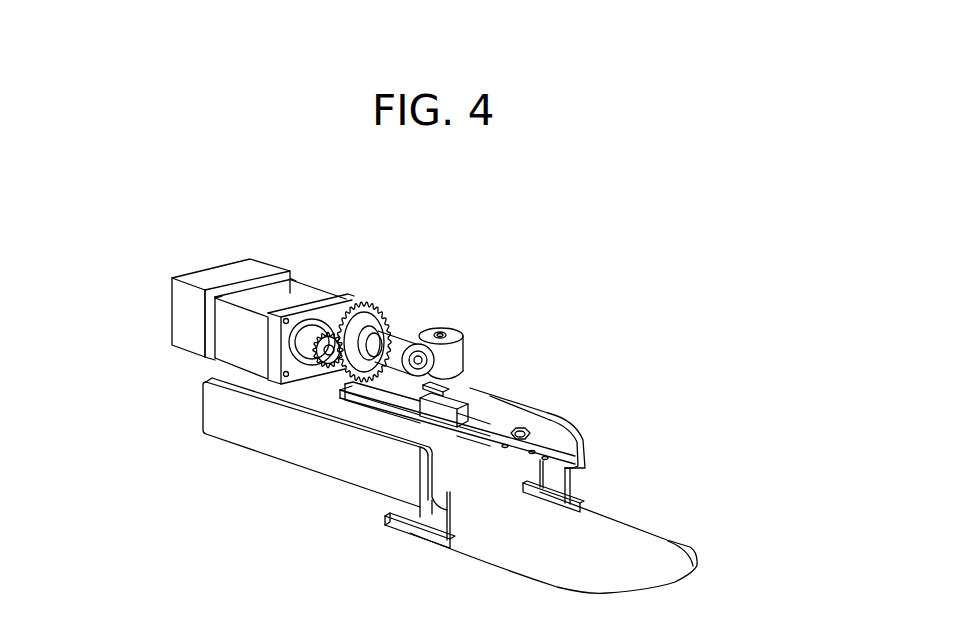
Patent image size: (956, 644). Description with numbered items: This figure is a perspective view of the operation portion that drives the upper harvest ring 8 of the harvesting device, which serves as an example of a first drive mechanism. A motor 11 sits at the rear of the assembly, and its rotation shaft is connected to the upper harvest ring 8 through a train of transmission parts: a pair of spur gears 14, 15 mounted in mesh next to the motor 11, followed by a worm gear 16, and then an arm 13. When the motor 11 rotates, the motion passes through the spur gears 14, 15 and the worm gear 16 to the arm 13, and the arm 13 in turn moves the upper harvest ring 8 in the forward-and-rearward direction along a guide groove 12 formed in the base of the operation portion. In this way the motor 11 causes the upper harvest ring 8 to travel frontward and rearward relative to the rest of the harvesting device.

The upper harvest ring 8 is at (692, 552).
The motor 11 is at (187, 320).
The guide groove 12 is at (390, 398).
The arm 13 is at (487, 427).
The spur gear 14 is at (322, 335).
The spur gear 15 is at (361, 313).
The worm gear 16 is at (412, 338).